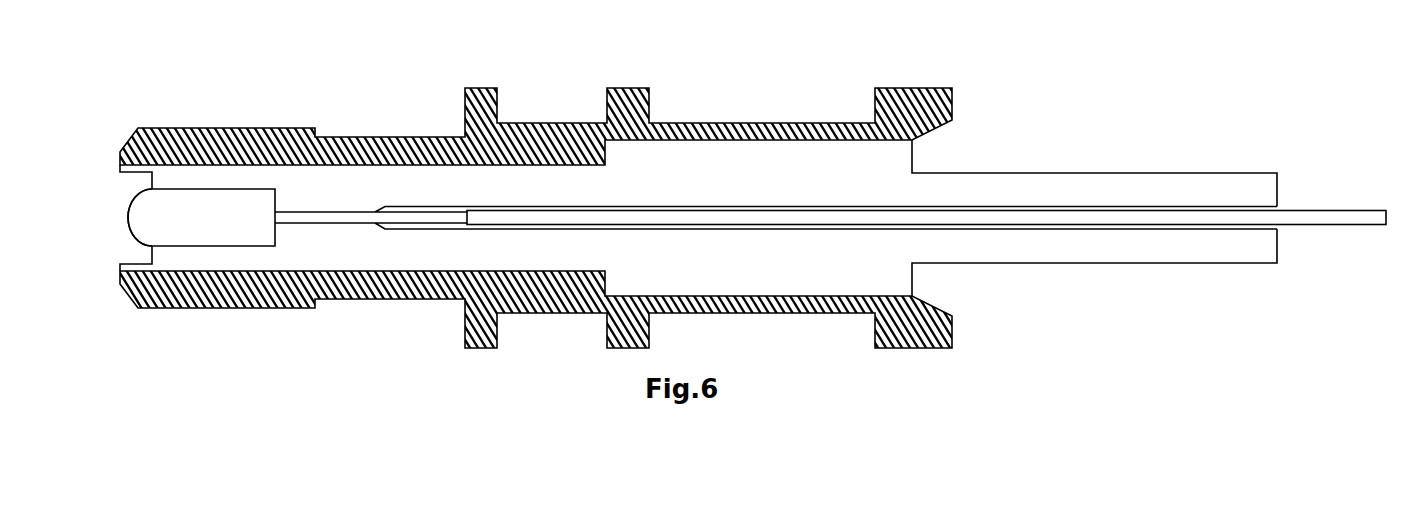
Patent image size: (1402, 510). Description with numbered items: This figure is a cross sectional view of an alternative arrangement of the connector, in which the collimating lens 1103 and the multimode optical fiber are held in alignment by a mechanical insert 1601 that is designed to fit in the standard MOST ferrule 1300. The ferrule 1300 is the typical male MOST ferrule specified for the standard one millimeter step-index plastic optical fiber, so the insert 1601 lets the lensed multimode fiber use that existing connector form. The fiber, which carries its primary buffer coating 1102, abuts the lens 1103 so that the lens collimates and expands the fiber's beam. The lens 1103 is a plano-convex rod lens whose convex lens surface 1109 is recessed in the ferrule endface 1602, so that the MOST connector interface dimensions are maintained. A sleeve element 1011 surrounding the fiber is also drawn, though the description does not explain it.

The ferrule endface 1602 is at (118, 156).
The MOST ferrule 1300 is at (489, 190).
The mechanical insert 1601 is at (767, 170).
The collimating lens 1103 is at (207, 200).
The convex lens surface 1109 is at (133, 212).
The fiber ferrule sleeve 1011 is at (402, 218).
The primary buffer coating 1102 is at (1300, 217).